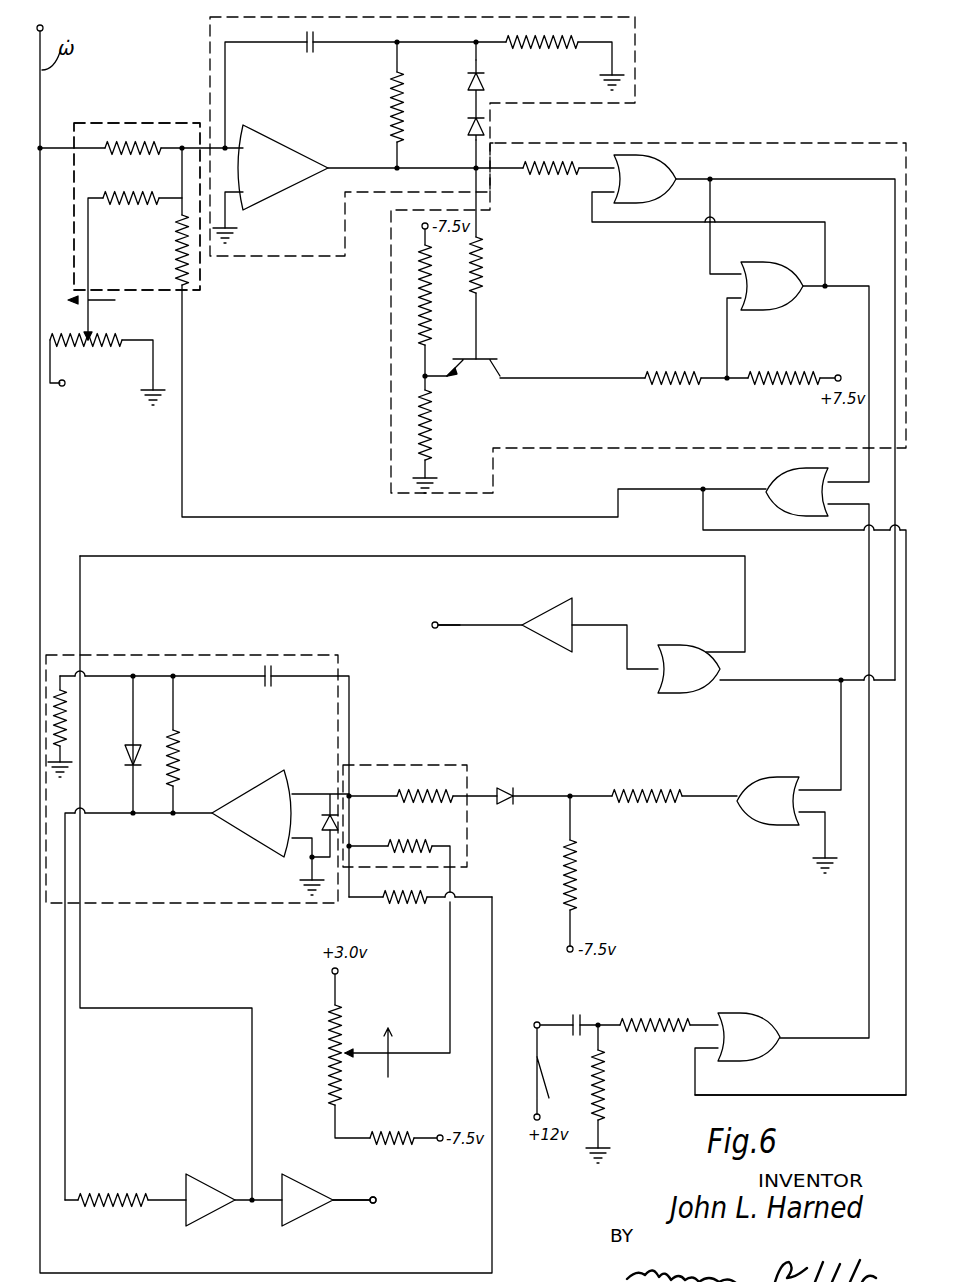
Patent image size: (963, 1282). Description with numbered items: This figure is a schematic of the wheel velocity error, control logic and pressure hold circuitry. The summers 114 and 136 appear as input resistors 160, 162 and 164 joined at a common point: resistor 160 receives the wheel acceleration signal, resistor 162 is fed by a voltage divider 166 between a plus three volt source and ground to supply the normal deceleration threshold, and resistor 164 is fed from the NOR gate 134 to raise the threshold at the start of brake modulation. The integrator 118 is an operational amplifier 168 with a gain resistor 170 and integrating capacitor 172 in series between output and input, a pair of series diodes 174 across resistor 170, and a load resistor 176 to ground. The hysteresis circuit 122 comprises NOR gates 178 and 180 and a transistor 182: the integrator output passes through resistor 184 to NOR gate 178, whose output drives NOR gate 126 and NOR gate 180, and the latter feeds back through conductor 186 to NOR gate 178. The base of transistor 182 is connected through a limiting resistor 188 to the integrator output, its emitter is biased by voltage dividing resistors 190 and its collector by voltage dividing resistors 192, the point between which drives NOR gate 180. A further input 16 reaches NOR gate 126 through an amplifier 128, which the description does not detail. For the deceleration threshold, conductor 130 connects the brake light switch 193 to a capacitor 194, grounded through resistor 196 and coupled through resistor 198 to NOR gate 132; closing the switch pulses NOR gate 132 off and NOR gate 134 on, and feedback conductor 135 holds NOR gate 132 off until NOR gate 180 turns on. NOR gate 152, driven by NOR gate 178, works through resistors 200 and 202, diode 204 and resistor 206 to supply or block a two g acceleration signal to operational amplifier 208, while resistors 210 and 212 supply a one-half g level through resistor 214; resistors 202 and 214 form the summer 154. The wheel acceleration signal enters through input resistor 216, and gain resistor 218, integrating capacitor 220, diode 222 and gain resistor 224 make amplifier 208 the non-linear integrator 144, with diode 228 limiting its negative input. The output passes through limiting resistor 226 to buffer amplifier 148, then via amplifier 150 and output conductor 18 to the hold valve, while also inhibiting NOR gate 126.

The input terminal 16 is at (478, 622).
The output conductor 18 is at (352, 1208).
The summer 114 is at (126, 123).
The integrator 118 is at (638, 74).
The hysteresis circuit 122 is at (785, 145).
The NOR gate 126 is at (675, 652).
The inverter amplifier 128 is at (565, 615).
The conductor 130 is at (535, 1022).
The NOR gate 132 is at (760, 1022).
The NOR gate 134 is at (776, 480).
The feedback conductor 135 is at (810, 1095).
The summer 136 is at (148, 123).
The non-linear integrator 144 is at (340, 673).
The buffer amplifier 148 is at (226, 1176).
The amplifier 150 is at (290, 1230).
The NOR gate 152 is at (776, 782).
The summer 154 is at (430, 765).
The input resistor 160 is at (116, 149).
The input resistor 162 is at (146, 204).
The input resistor 164 is at (180, 240).
The voltage divider 166 is at (110, 340).
The operational amplifier 168 is at (298, 148).
The gain resistor 170 is at (392, 112).
The integrating capacitor 172 is at (320, 46).
The diodes 174 is at (467, 134).
The load resistor 176 is at (527, 48).
The NOR gate 178 is at (685, 173).
The NOR gate 180 is at (795, 265).
The transistor 182 is at (482, 358).
The resistor 184 is at (530, 172).
The feedback conductor 186 is at (798, 228).
The limiting resistor 188 is at (486, 270).
The voltage dividing resistors 190 is at (420, 397).
The voltage dividing resistors 192 is at (752, 381).
The brake light switch 193 is at (546, 1072).
The capacitor 194 is at (586, 1022).
The voltage dividing resistor 196 is at (606, 1102).
The resistor 198 is at (650, 1022).
The voltage dividing resistor 200 is at (645, 792).
The voltage dividing resistor 202 is at (419, 794).
The diode 204 is at (500, 792).
The voltage dividing resistor 206 is at (586, 880).
The operational amplifier 208 is at (260, 775).
The resistor 210 is at (390, 1146).
The resistor 212 is at (325, 1072).
The input resistor 214 is at (400, 843).
The input resistor 216 is at (393, 905).
The gain resistor 218 is at (178, 768).
The integrating capacitor 220 is at (274, 672).
The diode 222 is at (127, 752).
The gain resistor 224 is at (60, 700).
The limiting resistor 226 is at (96, 1200).
The diode 228 is at (340, 823).